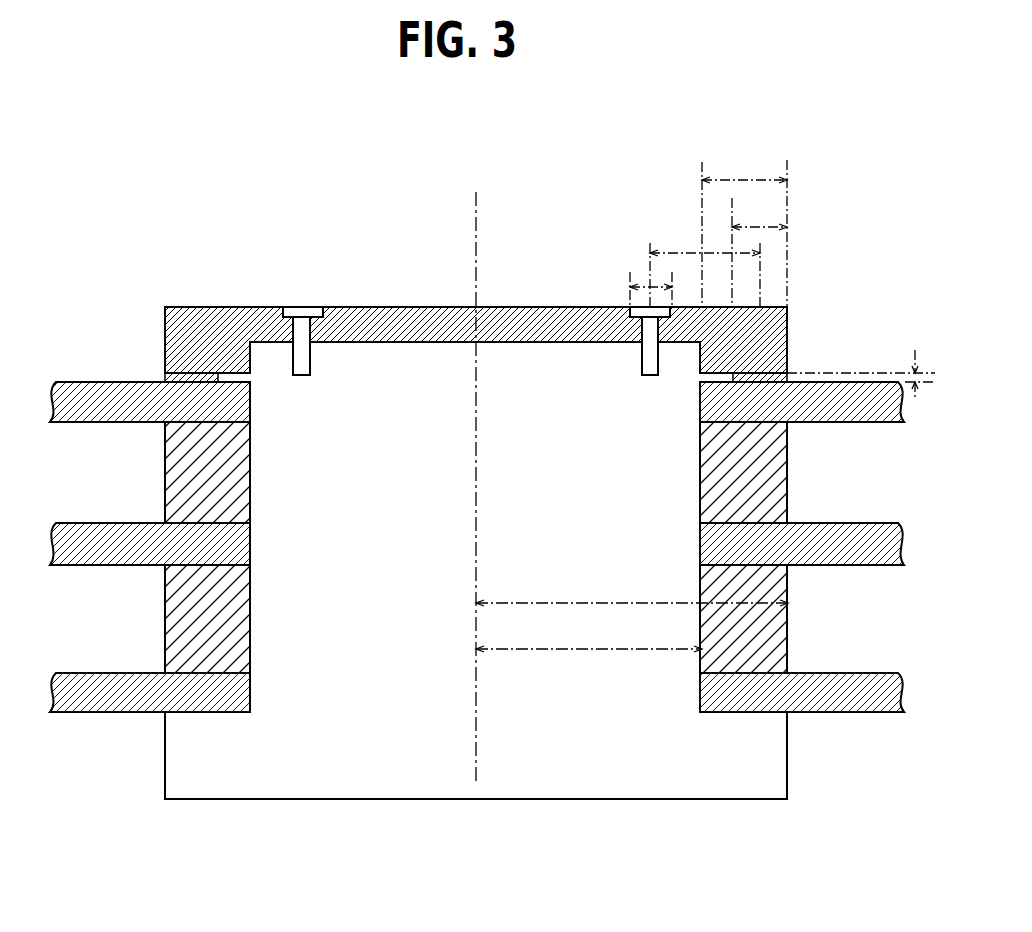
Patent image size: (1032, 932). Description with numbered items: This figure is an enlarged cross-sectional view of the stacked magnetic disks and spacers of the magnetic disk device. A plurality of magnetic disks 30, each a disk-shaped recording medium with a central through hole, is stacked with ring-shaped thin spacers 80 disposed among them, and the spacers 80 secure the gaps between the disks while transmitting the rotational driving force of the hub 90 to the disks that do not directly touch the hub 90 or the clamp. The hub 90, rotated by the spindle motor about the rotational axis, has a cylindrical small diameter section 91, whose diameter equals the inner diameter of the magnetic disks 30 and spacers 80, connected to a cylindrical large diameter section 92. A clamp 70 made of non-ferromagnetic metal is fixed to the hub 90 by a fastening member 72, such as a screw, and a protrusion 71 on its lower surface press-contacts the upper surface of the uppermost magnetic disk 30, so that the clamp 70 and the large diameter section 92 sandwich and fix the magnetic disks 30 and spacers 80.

The magnetic disk 30 is at (70, 382).
The clamp 70 is at (232, 307).
The protrusion 71 is at (790, 373).
The fastening member 72 is at (302, 307).
The spacer 80 is at (788, 490).
The hub 90 is at (378, 799).
The small diameter section 91 is at (248, 480).
The large diameter section 92 is at (163, 760).